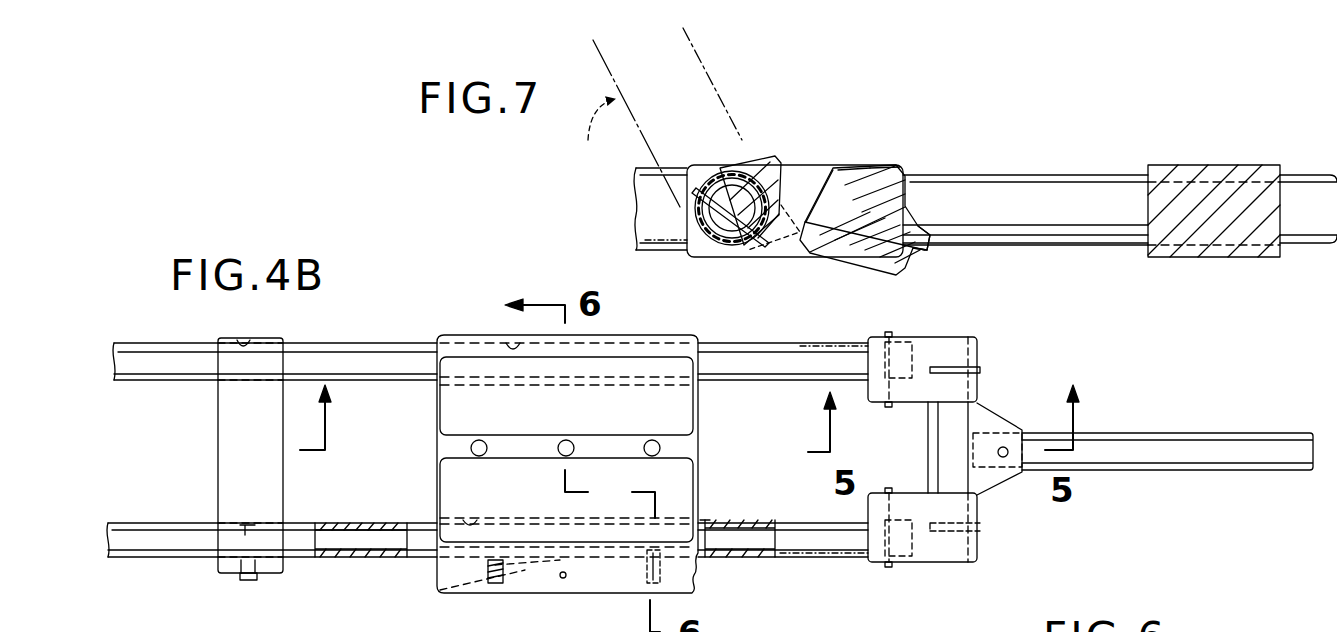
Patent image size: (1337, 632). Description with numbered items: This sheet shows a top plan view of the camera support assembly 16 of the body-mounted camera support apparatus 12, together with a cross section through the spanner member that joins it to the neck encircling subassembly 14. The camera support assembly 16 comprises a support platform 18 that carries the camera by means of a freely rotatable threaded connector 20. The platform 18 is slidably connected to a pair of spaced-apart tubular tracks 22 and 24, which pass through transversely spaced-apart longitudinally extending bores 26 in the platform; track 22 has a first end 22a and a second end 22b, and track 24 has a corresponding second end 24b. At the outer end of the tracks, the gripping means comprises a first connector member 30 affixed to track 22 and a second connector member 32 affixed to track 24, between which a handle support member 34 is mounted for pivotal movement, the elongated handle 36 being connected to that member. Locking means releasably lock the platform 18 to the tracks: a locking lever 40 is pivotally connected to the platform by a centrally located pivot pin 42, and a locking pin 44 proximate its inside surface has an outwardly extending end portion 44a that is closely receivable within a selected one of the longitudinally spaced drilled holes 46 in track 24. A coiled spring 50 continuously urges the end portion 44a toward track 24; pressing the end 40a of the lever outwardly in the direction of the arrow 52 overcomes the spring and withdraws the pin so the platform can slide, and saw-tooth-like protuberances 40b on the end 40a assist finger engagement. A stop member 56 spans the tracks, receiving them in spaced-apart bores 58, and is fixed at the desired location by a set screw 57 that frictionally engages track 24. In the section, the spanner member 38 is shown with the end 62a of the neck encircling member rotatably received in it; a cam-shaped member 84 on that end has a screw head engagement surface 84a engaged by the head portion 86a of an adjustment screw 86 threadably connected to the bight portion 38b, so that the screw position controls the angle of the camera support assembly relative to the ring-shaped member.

In FIG. 7, the body-mounted camera support apparatus 12 is at (475, 265).
In FIG. 7, the neck encircling subassembly 14 is at (630, 170).
In FIG. 7, the camera support assembly 16 is at (1118, 250).
In FIG. 4B, the camera support assembly 16 is at (372, 343).
In FIG. 4B, the support platform 18 is at (612, 340).
In FIG. 4B, the threaded connector 20 is at (567, 440).
In FIG. 7, the track 22 is at (1294, 185).
In FIG. 4B, the track 22 is at (755, 348).
In FIG. 7, the first end of track 22a is at (1005, 190).
In FIG. 4B, the second end of track 22b is at (828, 348).
In FIG. 4B, the track 24 is at (790, 553).
In FIG. 4B, the second end of track 24b is at (838, 553).
In FIG. 4B, the bores 26 is at (508, 342).
In FIG. 4B, the first connector member 30 is at (900, 340).
In FIG. 4B, the second connector member 32 is at (915, 562).
In FIG. 4B, the handle support member 34 is at (1005, 415).
In FIG. 4B, the elongated handle 36 is at (1140, 433).
In FIG. 7, the spanner member 38 is at (866, 256).
In FIG. 7, the bight portion 38b is at (905, 170).
In FIG. 4B, the locking lever 40 is at (462, 590).
In FIG. 4B, the end of locking lever 40a is at (678, 583).
In FIG. 4B, the saw-tooth-like protuberances 40b is at (698, 578).
In FIG. 4B, the pivot pin 42 is at (563, 578).
In FIG. 4B, the locking pin 44 is at (645, 575).
In FIG. 4B, the end portion of locking pin 44a is at (708, 530).
In FIG. 4B, the drilled holes 46 is at (380, 560).
In FIG. 4B, the coiled spring 50 is at (496, 583).
In FIG. 4B, the arrow 52 is at (700, 590).
In FIG. 7, the stop member 56 is at (1190, 257).
In FIG. 4B, the stop member 56 is at (230, 447).
In FIG. 4B, the set screw 57 is at (260, 340).
In FIG. 4B, the bores 58 is at (255, 528).
In FIG. 7, the end of neck encircling member 62a is at (712, 180).
In FIG. 7, the cam-shaped member 84 is at (732, 246).
In FIG. 7, the screw head engagement surface 84a is at (770, 158).
In FIG. 7, the adjustment screw 86 is at (920, 232).
In FIG. 7, the head portion of adjustment screw 86a is at (833, 185).